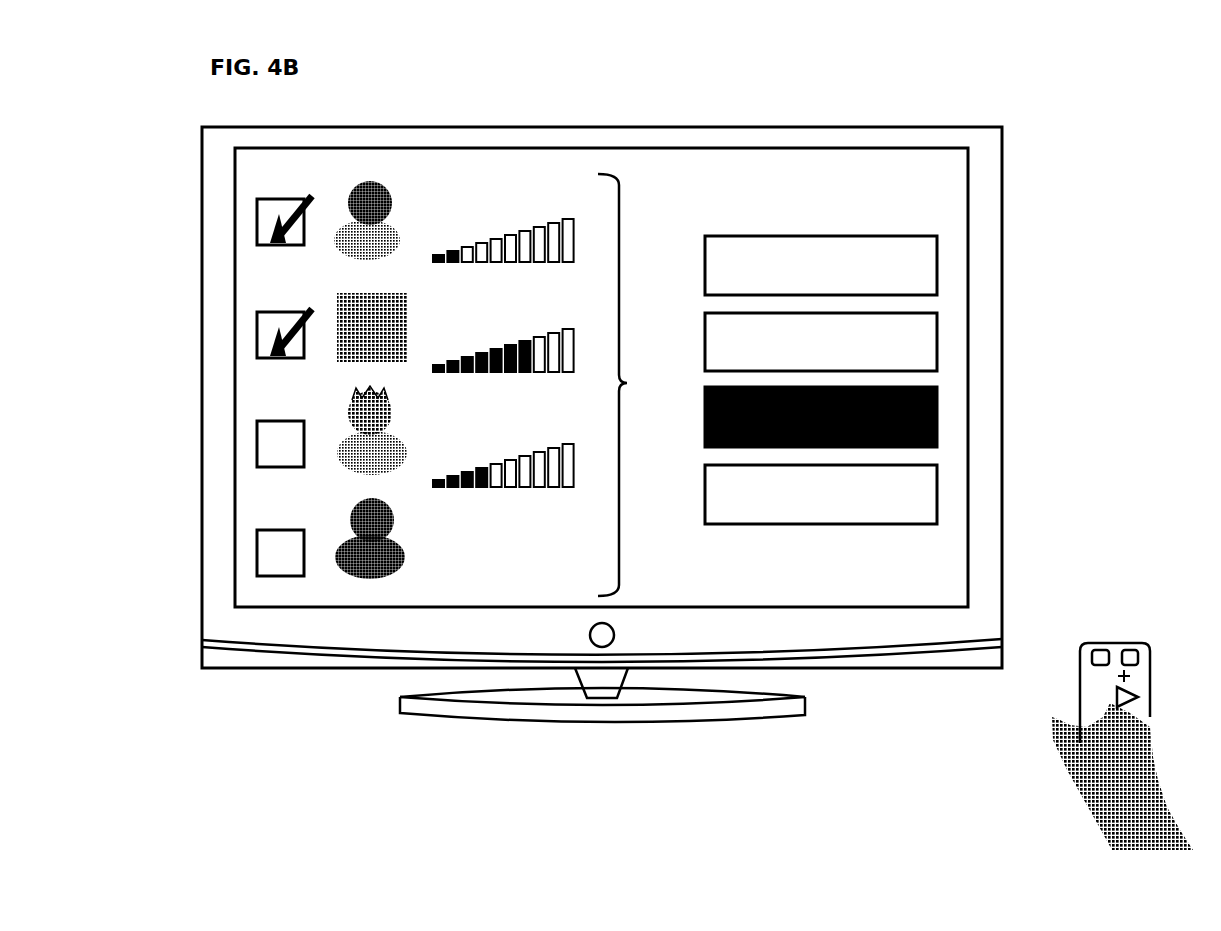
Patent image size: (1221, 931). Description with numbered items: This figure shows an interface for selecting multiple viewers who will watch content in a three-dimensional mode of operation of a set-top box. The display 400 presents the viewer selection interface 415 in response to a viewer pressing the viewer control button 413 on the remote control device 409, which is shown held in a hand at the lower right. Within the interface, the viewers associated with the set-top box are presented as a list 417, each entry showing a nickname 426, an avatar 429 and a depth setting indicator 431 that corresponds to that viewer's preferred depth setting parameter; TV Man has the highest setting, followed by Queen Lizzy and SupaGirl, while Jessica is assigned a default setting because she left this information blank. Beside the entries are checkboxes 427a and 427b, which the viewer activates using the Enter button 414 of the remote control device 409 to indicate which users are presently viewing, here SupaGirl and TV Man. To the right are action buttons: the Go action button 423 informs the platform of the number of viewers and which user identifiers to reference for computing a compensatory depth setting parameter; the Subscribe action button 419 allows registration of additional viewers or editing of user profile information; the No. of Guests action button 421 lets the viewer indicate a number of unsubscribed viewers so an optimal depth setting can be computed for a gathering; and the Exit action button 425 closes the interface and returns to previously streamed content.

The display 400 is at (257, 104).
The viewer selection interface 415 is at (968, 190).
The list 417 is at (626, 383).
The Subscribe action button 419 is at (937, 265).
The No. of Guests action button 421 is at (937, 340).
The Go action button 423 is at (937, 413).
The Exit action button 425 is at (937, 492).
The nickname 426 is at (437, 190).
The checkbox 427a is at (272, 199).
The checkbox 427b is at (272, 312).
The avatar 429 is at (352, 405).
The depth setting indicator 431 is at (537, 266).
The remote control device 409 is at (1128, 648).
The viewer control button 413 is at (1100, 650).
The Enter button 414 is at (1138, 657).